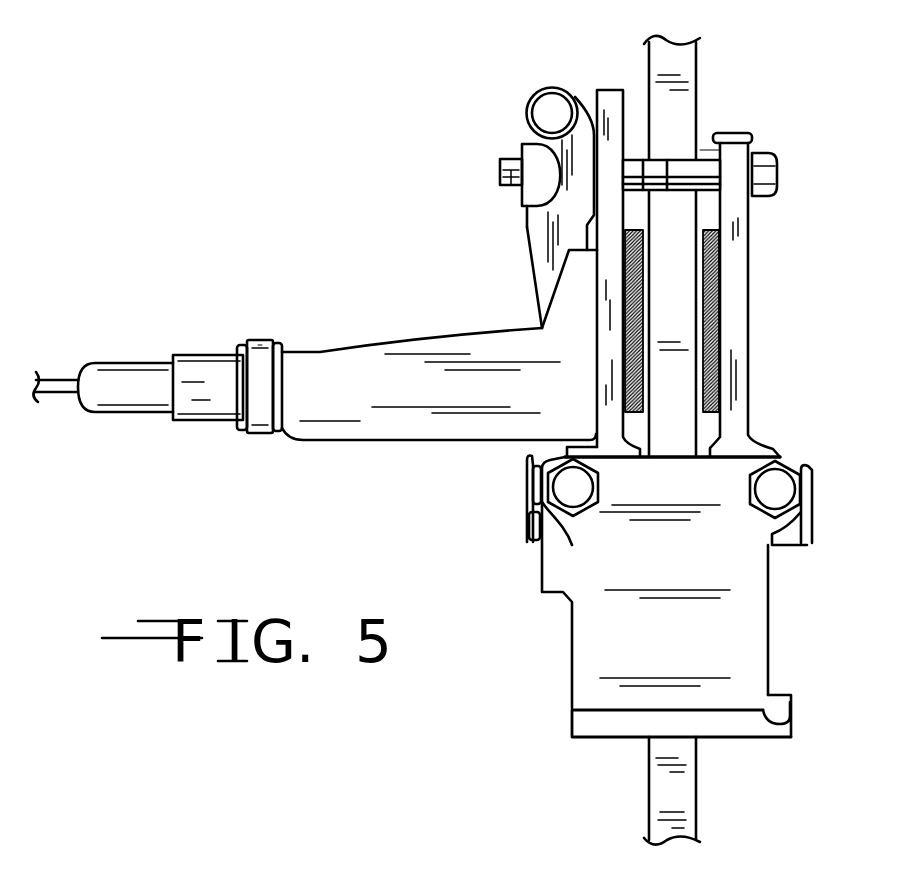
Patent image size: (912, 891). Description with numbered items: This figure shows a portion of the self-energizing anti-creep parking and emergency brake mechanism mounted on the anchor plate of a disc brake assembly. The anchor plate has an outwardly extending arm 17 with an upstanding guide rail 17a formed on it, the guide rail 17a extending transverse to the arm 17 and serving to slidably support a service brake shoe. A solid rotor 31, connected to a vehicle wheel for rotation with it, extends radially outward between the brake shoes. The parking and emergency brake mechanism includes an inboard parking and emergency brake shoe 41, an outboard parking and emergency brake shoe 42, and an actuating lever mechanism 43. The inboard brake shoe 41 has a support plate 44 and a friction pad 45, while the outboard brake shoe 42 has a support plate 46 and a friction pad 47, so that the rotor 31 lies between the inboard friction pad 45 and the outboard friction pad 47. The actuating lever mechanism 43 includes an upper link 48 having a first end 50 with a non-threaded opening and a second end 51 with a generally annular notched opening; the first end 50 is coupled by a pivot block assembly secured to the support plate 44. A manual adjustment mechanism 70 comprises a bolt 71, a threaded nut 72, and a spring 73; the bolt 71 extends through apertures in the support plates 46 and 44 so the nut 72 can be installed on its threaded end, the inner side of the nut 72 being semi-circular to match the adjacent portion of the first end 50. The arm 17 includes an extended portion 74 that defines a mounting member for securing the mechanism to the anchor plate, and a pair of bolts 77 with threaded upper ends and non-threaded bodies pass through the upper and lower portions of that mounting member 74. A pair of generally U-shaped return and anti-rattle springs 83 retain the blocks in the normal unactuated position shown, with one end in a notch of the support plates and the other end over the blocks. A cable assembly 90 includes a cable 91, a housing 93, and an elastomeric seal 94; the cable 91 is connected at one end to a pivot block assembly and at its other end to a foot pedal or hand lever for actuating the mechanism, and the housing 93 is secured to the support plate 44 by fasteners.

The arm 17 is at (752, 560).
The guide rail 17a is at (590, 723).
The rotor 31 is at (718, 65).
The inboard parking and emergency brake shoe 41 is at (572, 406).
The outboard parking and emergency brake shoe 42 is at (763, 332).
The actuating lever mechanism 43 is at (514, 290).
The support plate 44 is at (606, 370).
The friction pad 45 is at (617, 298).
The support plate 46 is at (739, 275).
The friction pad 47 is at (714, 300).
The upper link 48 is at (473, 208).
The first end 50 is at (526, 128).
The second end 51 is at (533, 250).
The manual adjustment mechanism 70 is at (705, 138).
The bolt 71 is at (705, 190).
The threaded nut 72 is at (522, 200).
The spring 73 is at (752, 143).
The extended portion 74 is at (782, 643).
The bolts 77 is at (570, 487).
The return and anti-rattle springs 83 is at (530, 530).
The cable assembly 90 is at (262, 326).
The cable 91 is at (123, 413).
The housing 93 is at (362, 432).
The elastomeric seal 94 is at (258, 435).